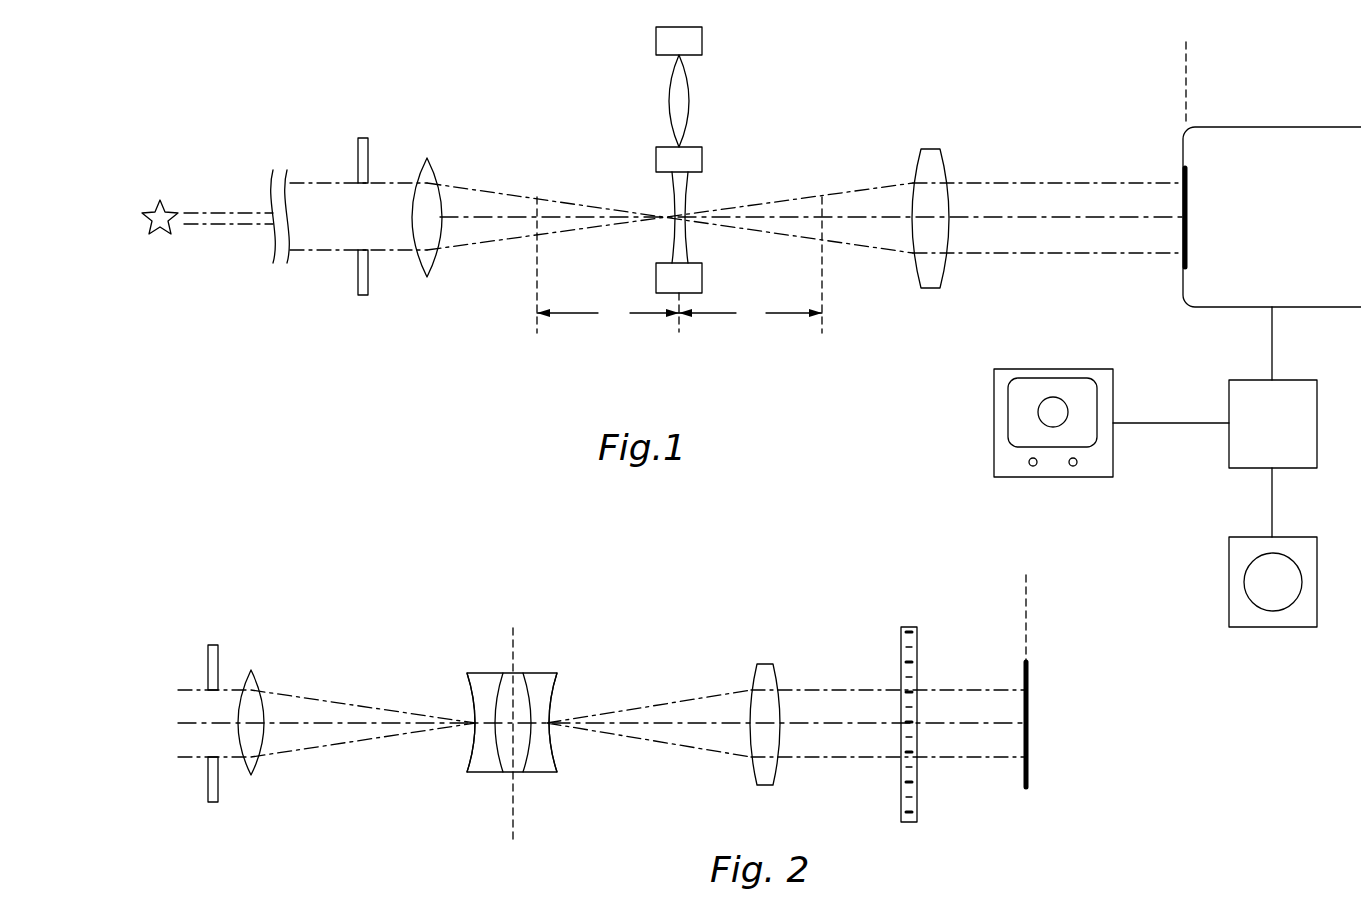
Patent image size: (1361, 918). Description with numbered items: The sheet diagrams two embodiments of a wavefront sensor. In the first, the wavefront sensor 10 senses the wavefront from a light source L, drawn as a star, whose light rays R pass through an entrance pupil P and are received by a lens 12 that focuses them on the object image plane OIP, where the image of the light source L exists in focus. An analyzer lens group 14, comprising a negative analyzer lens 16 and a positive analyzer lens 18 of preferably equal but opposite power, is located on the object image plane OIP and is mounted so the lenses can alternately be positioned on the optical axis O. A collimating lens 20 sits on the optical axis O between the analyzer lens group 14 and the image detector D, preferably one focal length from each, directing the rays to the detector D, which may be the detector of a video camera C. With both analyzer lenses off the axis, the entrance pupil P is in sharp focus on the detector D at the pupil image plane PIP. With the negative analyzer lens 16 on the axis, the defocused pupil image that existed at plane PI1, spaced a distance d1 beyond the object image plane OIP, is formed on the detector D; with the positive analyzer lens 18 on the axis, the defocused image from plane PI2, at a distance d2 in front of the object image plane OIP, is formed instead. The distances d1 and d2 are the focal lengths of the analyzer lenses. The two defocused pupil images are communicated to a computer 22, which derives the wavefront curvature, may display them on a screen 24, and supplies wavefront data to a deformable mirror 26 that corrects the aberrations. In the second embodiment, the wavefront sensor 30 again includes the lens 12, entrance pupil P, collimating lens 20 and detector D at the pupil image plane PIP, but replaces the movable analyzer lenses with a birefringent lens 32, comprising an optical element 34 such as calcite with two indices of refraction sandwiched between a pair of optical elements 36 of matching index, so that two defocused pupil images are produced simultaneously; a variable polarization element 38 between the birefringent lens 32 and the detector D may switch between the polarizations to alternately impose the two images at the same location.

In FIG. 1, the wavefront sensor 10 is at (903, 75).
In FIG. 1, the lens 12 is at (432, 172).
In FIG. 2, the lens 12 is at (256, 676).
In FIG. 1, the analyzer lens group 14 is at (703, 280).
In FIG. 1, the negative analyzer lens 16 is at (672, 248).
In FIG. 1, the positive analyzer lens 18 is at (690, 95).
In FIG. 1, the collimating lens 20 is at (918, 275).
In FIG. 2, the collimating lens 20 is at (760, 665).
In FIG. 1, the computer 22 is at (1302, 380).
In FIG. 1, the screen 24 is at (994, 405).
In FIG. 1, the deformable mirror 26 is at (1302, 537).
In FIG. 2, the wavefront sensor 30 is at (613, 607).
In FIG. 2, the birefringent lens 32 is at (478, 672).
In FIG. 2, the optical element 34 is at (517, 683).
In FIG. 2, the optical elements 36 is at (487, 765).
In FIG. 2, the variable polarization element 38 is at (907, 627).
In FIG. 1, the light source L is at (161, 201).
In FIG. 1, the light rays R is at (316, 184).
In FIG. 1, the entrance pupil P is at (358, 252).
In FIG. 2, the entrance pupil P is at (210, 756).
In FIG. 1, the optical axis O is at (479, 213).
In FIG. 2, the optical axis O is at (347, 723).
In FIG. 1, the plane PI1 is at (824, 210).
In FIG. 1, the pupil image plane PI2 is at (538, 212).
In FIG. 1, the object image plane OIP is at (680, 322).
In FIG. 2, the object image plane OIP is at (514, 838).
In FIG. 1, the pupil image plane PIP is at (1188, 95).
In FIG. 2, the pupil image plane PIP is at (1030, 627).
In FIG. 1, the image detector D is at (1180, 260).
In FIG. 2, the image detector D is at (1032, 680).
In FIG. 1, the video camera C is at (1308, 138).
In FIG. 1, the distance d1 is at (750, 314).
In FIG. 1, the distance d2 is at (608, 314).